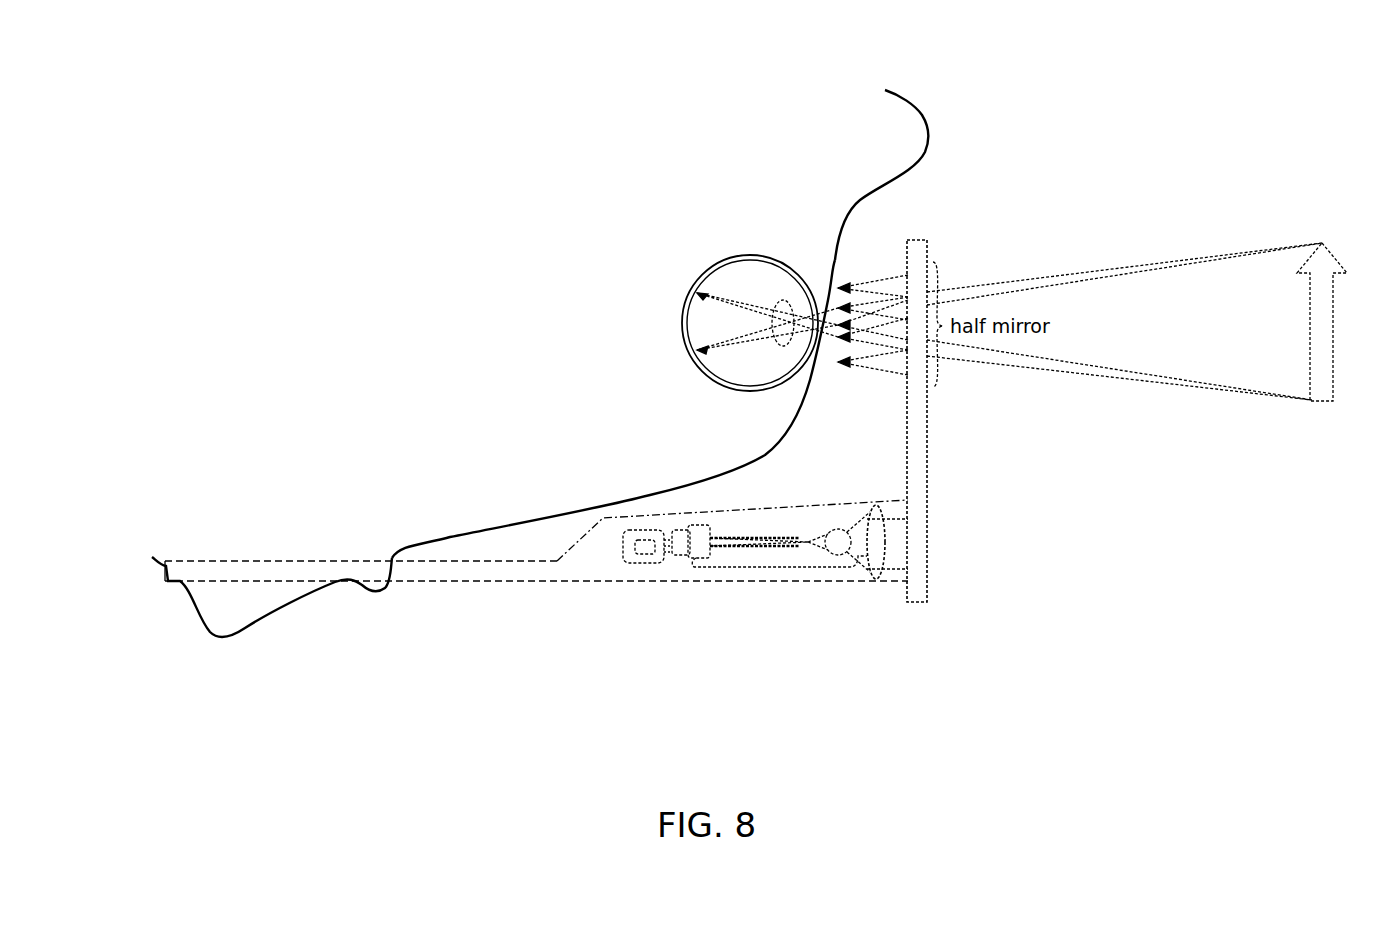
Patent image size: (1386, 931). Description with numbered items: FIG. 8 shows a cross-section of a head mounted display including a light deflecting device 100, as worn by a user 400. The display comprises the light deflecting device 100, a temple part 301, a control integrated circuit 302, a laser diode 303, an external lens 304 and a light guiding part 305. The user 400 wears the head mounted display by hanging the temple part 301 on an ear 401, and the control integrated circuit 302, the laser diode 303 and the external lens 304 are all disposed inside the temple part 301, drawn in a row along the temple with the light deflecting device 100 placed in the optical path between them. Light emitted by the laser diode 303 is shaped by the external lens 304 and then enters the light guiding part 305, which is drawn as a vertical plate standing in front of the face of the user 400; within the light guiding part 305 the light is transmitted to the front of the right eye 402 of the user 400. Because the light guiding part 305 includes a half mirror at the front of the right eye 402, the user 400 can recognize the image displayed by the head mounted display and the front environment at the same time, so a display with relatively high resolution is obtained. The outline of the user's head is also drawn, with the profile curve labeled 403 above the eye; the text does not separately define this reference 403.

The light deflecting device 100 is at (772, 568).
The temple part 301 is at (413, 568).
The control integrated circuit 302 is at (645, 560).
The laser diode 303 is at (682, 558).
The external lens 304 is at (885, 514).
The light guiding part 305 is at (928, 577).
The user 400 is at (403, 210).
The ear 401 is at (249, 606).
The right eye 402 is at (747, 256).
The forehead 403 is at (921, 112).